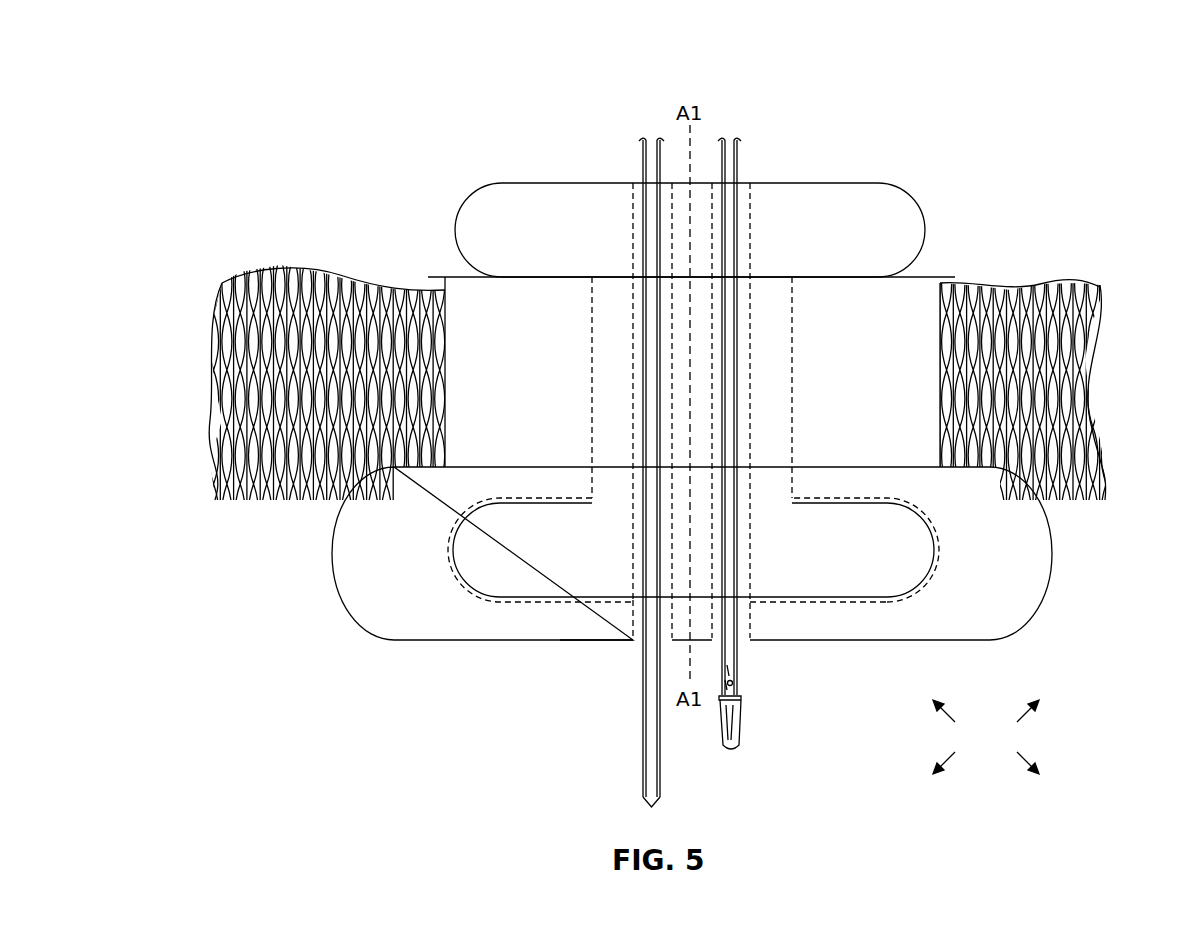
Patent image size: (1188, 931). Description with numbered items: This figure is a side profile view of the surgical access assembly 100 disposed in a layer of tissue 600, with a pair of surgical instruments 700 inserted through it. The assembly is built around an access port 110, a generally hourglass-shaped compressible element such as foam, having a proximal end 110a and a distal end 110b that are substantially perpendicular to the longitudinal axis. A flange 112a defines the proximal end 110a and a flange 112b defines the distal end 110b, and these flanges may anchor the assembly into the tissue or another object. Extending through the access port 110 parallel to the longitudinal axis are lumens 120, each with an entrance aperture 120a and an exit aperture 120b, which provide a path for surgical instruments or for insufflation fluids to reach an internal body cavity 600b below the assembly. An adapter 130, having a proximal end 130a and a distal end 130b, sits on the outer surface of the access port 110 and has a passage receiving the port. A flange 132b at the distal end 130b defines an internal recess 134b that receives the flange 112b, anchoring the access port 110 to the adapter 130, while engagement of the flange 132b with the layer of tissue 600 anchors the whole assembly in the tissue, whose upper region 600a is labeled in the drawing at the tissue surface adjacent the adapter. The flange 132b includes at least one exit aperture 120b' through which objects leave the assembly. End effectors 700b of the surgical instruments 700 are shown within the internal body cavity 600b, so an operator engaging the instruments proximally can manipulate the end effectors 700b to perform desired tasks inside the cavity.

The surgical access assembly 100 is at (486, 60).
The access port 110 is at (583, 310).
The proximal end 110a is at (500, 182).
The distal end 110b is at (597, 600).
The flange 112a is at (455, 232).
The flange 112b is at (932, 552).
The lumen 120 is at (752, 292).
The entrance aperture 120a is at (633, 182).
The exit aperture 120b is at (776, 431).
The exit aperture 120b' is at (595, 676).
The adapter 130 is at (434, 393).
The proximal end 130a is at (428, 278).
The distal end 130b is at (600, 640).
The flange 132b is at (335, 595).
The internal recess 134b is at (450, 538).
The layer of tissue 600 is at (1085, 400).
The graft mesh upper edge 600a is at (1057, 283).
The internal body cavity 600b is at (986, 737).
The surgical instrument 700 is at (745, 213).
The end effector 700b is at (742, 712).